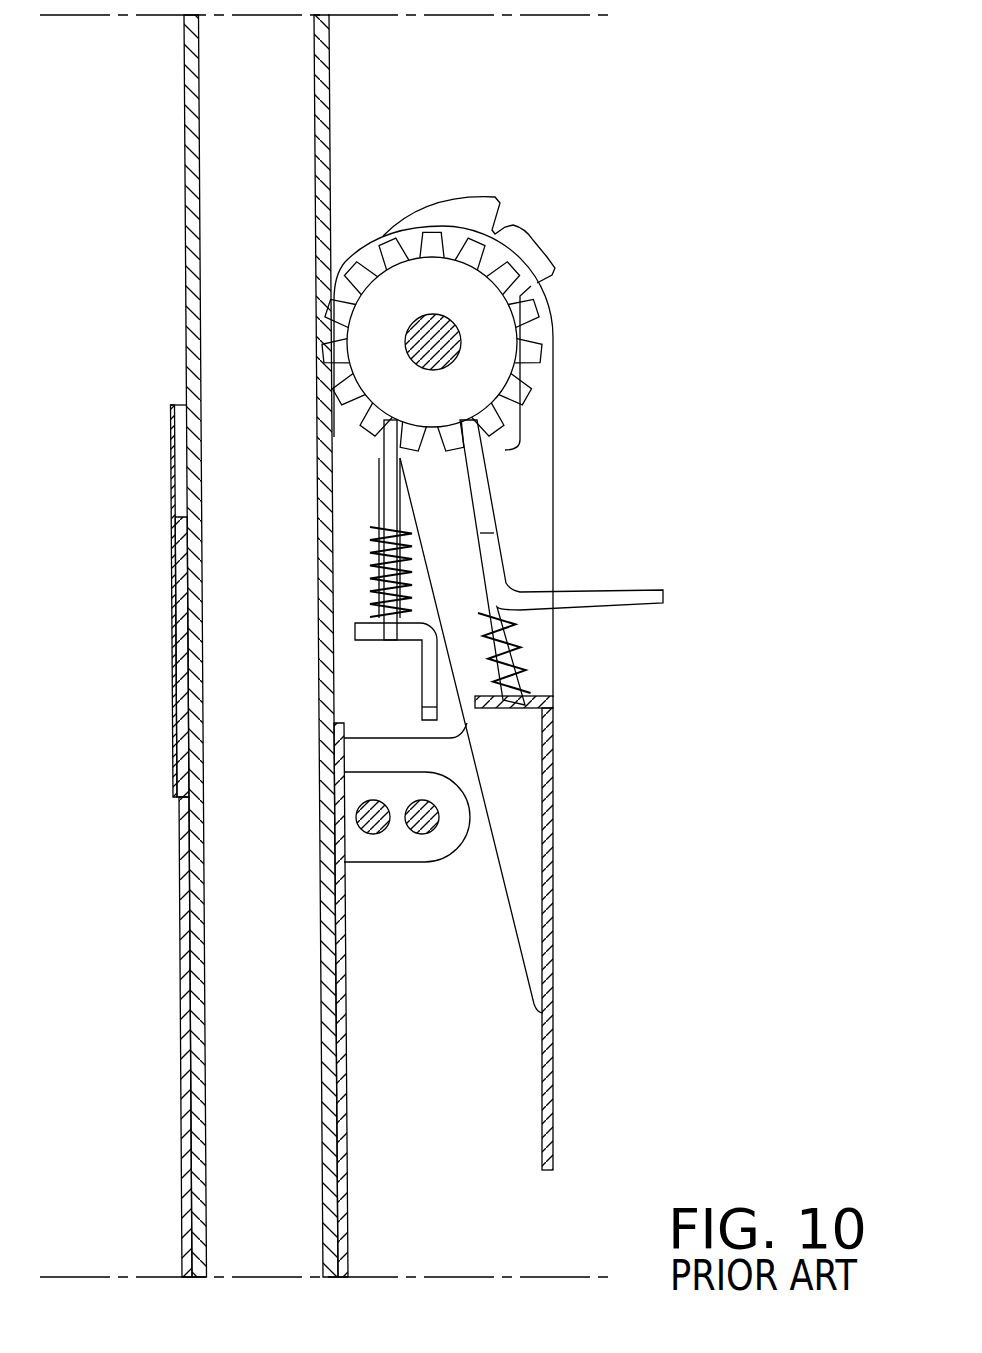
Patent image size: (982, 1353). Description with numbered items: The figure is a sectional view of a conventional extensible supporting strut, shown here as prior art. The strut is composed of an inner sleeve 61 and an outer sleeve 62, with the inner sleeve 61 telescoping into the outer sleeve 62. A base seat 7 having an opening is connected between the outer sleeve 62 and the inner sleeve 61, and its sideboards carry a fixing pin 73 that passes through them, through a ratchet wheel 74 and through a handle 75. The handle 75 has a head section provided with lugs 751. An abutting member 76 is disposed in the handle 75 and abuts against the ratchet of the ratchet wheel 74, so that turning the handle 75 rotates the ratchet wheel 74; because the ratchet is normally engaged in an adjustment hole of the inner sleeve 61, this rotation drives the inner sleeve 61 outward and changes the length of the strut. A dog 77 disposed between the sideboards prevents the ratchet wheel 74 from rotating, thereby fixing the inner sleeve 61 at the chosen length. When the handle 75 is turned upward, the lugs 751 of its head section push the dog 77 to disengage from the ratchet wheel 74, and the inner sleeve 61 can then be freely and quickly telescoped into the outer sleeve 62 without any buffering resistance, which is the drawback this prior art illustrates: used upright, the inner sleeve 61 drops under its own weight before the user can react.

The base seat 7 is at (172, 727).
The inner sleeve 61 is at (185, 186).
The outer sleeve 62 is at (191, 1120).
The fixing pin 73 is at (440, 348).
The ratchet wheel 74 is at (545, 322).
The handle 75 is at (525, 940).
The lugs 751 is at (478, 210).
The abutting member 76 is at (490, 557).
The dog 77 is at (390, 434).